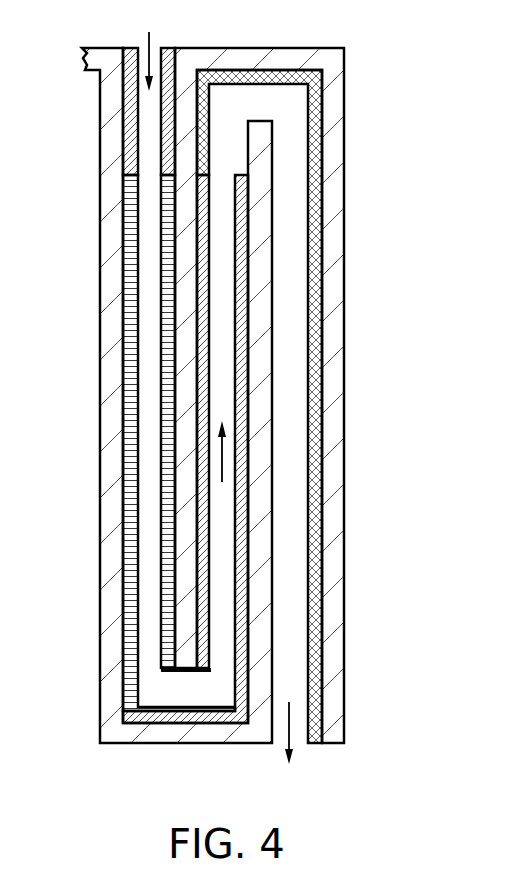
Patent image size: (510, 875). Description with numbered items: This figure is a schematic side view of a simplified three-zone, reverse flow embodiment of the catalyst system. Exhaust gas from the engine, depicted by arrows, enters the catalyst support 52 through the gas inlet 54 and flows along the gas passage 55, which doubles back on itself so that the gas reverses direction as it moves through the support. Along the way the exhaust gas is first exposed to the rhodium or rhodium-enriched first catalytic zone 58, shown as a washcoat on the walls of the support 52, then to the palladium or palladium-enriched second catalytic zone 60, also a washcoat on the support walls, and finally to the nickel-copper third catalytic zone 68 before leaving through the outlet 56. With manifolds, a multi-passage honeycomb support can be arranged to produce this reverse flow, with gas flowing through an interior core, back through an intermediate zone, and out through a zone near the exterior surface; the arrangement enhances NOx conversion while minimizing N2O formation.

The catalyst support 52 is at (236, 57).
The gas inlet 54 is at (141, 47).
The gas passage 55 is at (145, 246).
The outlet 56 is at (299, 743).
The first catalytic zone 58 is at (133, 109).
The second catalytic zone 60 is at (132, 506).
The third catalytic zone 68 is at (313, 153).